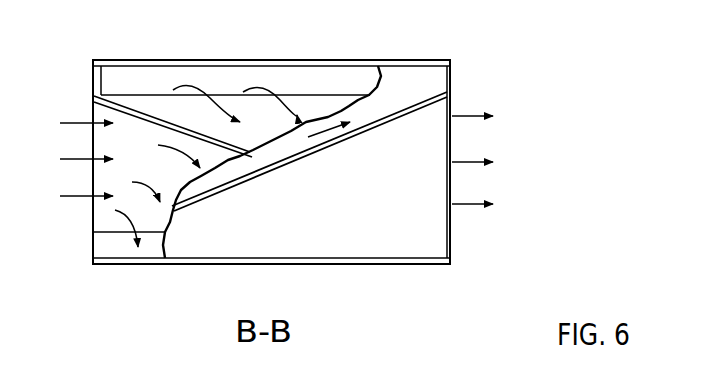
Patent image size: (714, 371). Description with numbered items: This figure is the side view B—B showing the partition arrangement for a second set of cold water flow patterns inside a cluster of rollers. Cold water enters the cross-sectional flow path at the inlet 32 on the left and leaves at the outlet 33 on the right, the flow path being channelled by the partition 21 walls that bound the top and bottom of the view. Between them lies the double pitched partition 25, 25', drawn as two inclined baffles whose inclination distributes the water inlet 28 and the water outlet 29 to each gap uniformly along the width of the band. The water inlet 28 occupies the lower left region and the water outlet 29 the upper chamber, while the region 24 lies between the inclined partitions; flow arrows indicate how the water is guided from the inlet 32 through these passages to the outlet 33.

The partition 21 is at (268, 60).
The unshaded flow region 24 is at (290, 162).
The double pitched partition 25 is at (173, 149).
The double pitched partition 25' is at (309, 151).
The water inlet 28 is at (128, 225).
The water outlet 29 is at (235, 97).
The inlet 32 is at (69, 159).
The outlet 33 is at (487, 160).